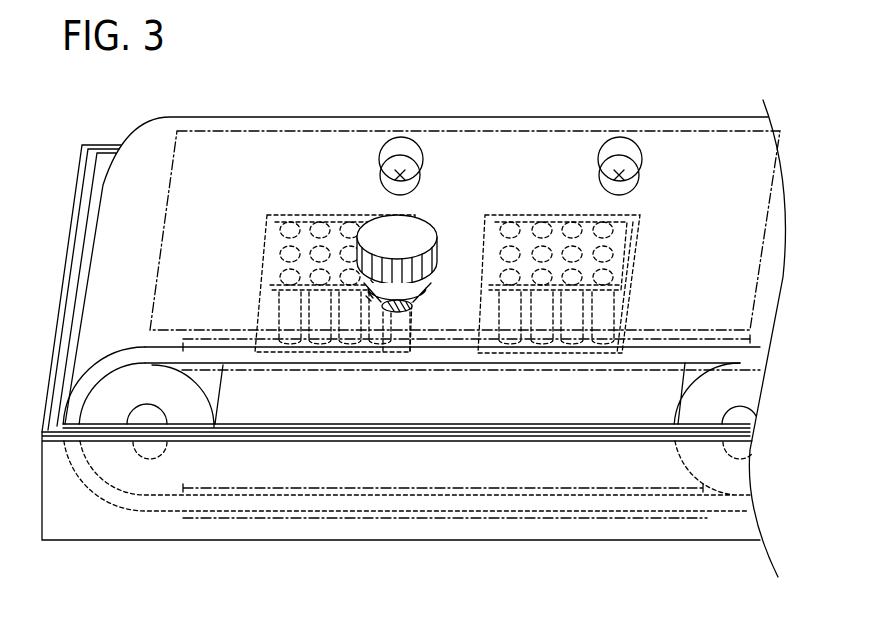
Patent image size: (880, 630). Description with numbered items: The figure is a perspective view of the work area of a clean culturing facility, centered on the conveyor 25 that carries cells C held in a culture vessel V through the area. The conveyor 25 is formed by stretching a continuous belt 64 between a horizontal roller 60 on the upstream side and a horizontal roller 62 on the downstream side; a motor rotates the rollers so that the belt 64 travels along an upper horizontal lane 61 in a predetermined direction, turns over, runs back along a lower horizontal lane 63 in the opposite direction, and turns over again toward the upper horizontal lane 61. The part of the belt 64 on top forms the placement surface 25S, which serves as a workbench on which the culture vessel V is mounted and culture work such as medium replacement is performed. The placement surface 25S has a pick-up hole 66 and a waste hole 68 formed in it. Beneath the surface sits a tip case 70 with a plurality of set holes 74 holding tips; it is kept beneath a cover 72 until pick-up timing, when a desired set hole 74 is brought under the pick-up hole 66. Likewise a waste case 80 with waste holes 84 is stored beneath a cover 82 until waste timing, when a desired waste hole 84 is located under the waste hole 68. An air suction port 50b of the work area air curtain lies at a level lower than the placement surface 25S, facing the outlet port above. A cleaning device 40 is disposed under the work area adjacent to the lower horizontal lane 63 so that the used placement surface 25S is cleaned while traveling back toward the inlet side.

The conveyor 25 is at (213, 115).
The placement surface 25S is at (292, 128).
The cleaning device 40 is at (65, 498).
The horizontal roller 60 is at (707, 407).
The upper horizontal lane 61 is at (577, 353).
The horizontal roller 62 is at (122, 405).
The lower horizontal lane 63 is at (592, 522).
The belt 64 is at (173, 358).
The pick-up hole 66 is at (402, 173).
The waste hole 68 is at (620, 173).
The tip case 70 is at (293, 330).
The cover 72 is at (278, 215).
The set holes 74 is at (358, 215).
The waste case 80 is at (515, 357).
The cover 82 is at (507, 212).
The waste holes 84 is at (577, 217).
The culture vessel V is at (405, 236).
The cells C is at (387, 310).
The air suction port 50b is at (398, 428).